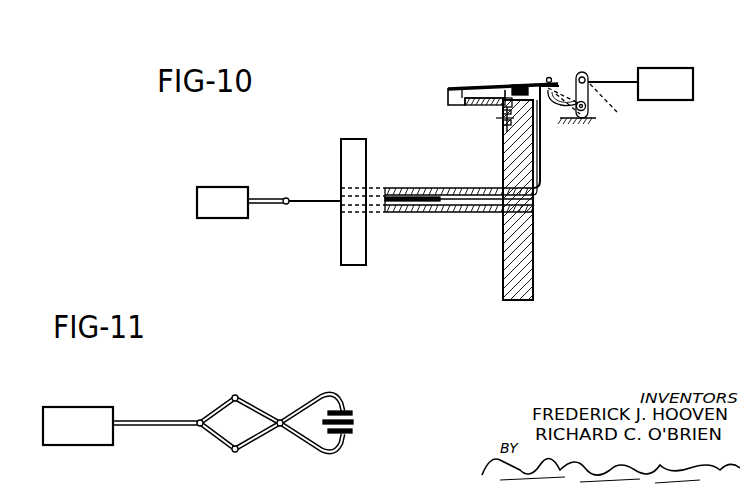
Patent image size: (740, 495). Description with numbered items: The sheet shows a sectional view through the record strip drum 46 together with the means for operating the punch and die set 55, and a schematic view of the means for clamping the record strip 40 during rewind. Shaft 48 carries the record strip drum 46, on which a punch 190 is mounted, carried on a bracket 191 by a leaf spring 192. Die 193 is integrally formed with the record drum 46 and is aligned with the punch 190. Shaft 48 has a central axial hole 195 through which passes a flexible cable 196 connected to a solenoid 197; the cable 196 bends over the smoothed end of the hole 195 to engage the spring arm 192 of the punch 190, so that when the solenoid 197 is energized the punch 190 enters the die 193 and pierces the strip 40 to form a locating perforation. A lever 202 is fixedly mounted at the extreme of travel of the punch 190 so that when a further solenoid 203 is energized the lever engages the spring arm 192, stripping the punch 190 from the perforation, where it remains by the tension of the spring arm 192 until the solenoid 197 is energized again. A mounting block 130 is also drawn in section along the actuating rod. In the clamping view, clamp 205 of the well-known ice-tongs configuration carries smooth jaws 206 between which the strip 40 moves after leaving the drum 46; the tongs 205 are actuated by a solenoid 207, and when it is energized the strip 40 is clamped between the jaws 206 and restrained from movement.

In FIG. 10, the record strip 40 is at (533, 87).
In FIG. 11, the record strip 40 is at (353, 422).
In FIG. 10, the record strip drum 46 is at (529, 248).
In FIG. 10, the shaft 48 is at (398, 212).
In FIG. 10, the punch and die set 55 is at (466, 67).
In FIG. 10, the mounting block 130 is at (350, 147).
In FIG. 10, the punch 190 is at (515, 87).
In FIG. 10, the bracket 191 is at (481, 105).
In FIG. 10, the leaf spring 192 is at (483, 87).
In FIG. 10, the die 193 is at (544, 132).
In FIG. 10, the central axial hole 195 is at (463, 212).
In FIG. 10, the flexible cable 196 is at (541, 168).
In FIG. 10, the solenoid 197 is at (215, 192).
In FIG. 10, the lever 202 is at (582, 72).
In FIG. 10, the solenoid 203 is at (672, 72).
In FIG. 11, the clamp 205 is at (285, 412).
In FIG. 11, the smooth jaws 206 is at (350, 410).
In FIG. 11, the solenoid 207 is at (78, 436).